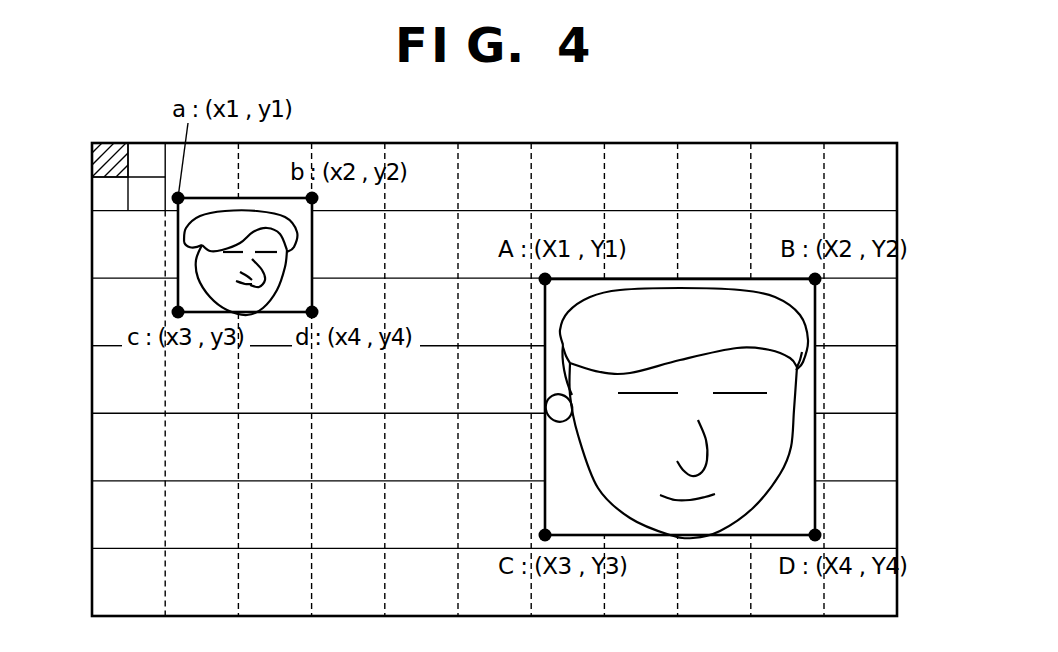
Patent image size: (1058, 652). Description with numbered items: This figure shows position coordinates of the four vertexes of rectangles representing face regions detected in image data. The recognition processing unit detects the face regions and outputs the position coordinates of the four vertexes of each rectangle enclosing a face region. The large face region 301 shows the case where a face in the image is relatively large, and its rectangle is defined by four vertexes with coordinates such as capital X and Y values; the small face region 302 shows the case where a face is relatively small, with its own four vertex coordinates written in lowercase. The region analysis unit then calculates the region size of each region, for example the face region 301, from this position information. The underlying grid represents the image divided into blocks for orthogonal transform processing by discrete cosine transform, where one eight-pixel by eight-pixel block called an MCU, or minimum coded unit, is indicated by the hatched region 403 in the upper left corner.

The region 403 is at (104, 143).
The face region 302 is at (312, 247).
The face region 301 is at (545, 444).